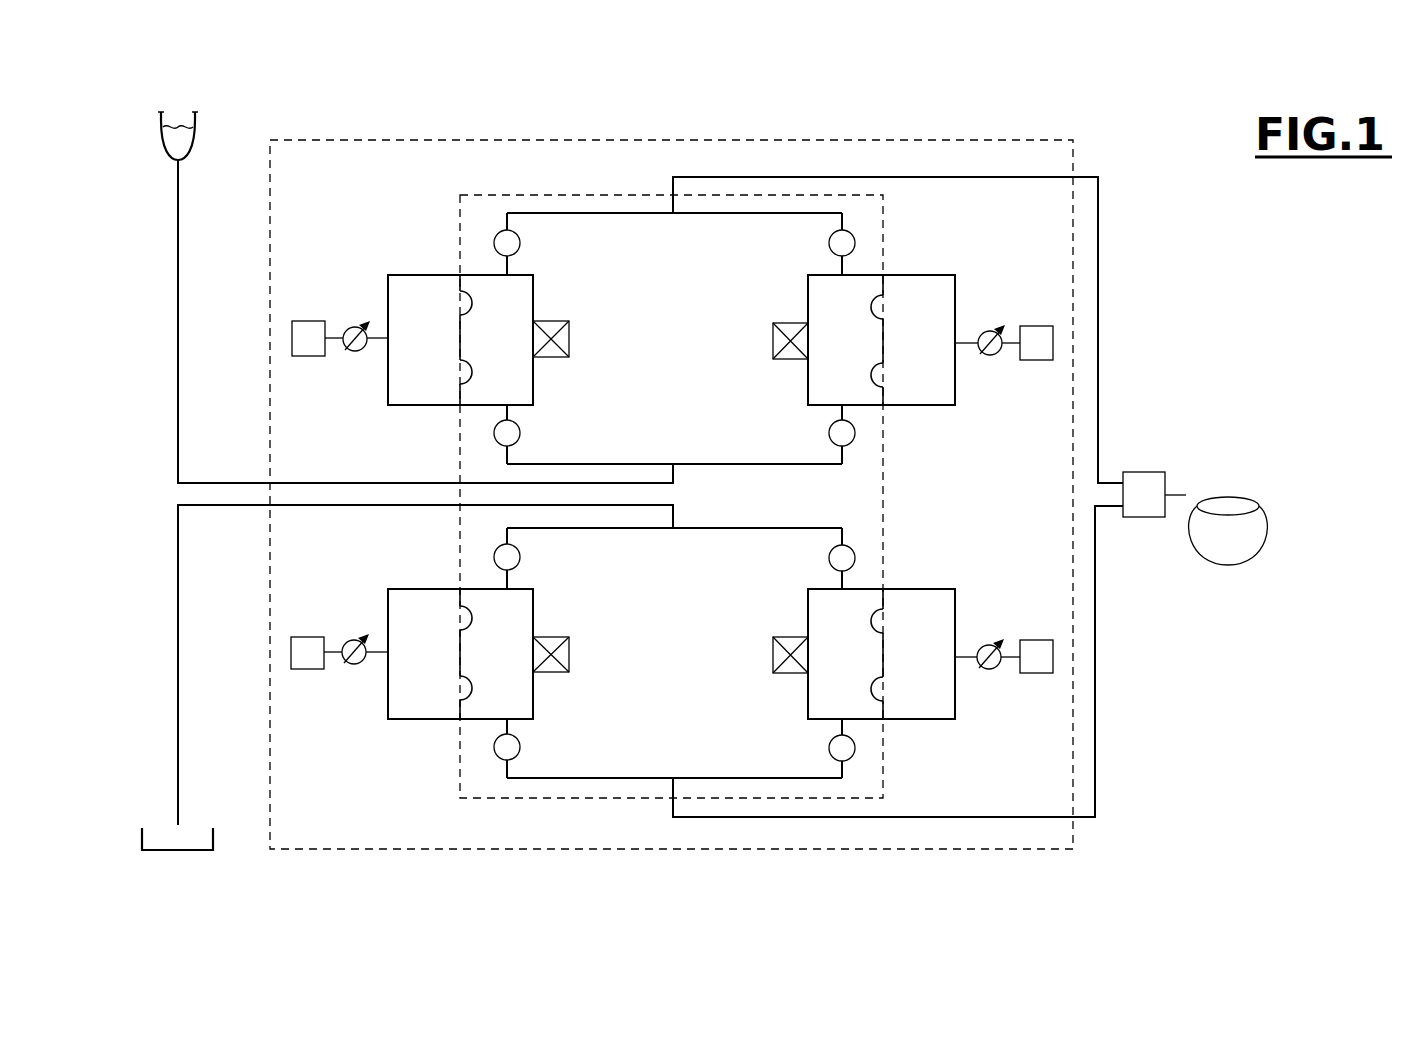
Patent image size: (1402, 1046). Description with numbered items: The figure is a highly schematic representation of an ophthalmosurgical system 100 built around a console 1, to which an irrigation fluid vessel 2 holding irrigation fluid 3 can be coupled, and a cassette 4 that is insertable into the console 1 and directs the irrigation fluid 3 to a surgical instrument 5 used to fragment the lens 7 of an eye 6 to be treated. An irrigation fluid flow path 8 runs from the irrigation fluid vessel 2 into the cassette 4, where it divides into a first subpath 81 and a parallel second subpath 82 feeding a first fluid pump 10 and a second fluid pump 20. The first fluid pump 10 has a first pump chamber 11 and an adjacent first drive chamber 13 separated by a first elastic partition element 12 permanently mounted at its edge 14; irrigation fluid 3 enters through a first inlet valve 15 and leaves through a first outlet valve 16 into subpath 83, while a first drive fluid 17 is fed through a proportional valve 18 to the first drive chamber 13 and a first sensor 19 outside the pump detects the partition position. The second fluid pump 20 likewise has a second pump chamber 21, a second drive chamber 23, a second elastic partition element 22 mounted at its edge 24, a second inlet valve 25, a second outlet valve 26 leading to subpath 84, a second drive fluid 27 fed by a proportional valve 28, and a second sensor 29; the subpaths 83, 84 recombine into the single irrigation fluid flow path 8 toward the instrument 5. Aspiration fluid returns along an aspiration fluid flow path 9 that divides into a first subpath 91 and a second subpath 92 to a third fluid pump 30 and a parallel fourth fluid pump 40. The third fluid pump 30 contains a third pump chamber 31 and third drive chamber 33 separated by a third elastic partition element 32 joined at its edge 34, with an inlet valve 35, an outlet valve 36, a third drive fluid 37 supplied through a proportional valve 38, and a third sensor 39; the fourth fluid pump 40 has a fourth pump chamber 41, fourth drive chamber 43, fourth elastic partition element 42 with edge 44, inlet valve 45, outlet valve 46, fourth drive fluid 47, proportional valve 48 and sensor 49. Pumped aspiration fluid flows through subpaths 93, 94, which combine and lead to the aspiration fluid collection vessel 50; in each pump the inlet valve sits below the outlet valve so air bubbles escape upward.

The console 1 is at (1001, 140).
The irrigation fluid vessel 2 is at (200, 122).
The irrigation fluid 3 is at (176, 128).
The cassette 4 is at (487, 195).
The surgical instrument 5 is at (1146, 472).
The eye 6 is at (1244, 566).
The lens 7 is at (1228, 500).
The irrigation fluid flow path 8 is at (180, 389).
The aspiration fluid flow path 9 is at (180, 611).
The first fluid pump 10 is at (455, 342).
The first pump chamber 11 is at (488, 322).
The first elastic partition element 12 is at (466, 346).
The first drive chamber 13 is at (413, 322).
The edge 14 is at (460, 286).
The first inlet valve 15 is at (521, 433).
The first outlet valve 16 is at (521, 245).
The first drive fluid 17 is at (304, 322).
The proportional valve 18 is at (349, 326).
The first sensor 19 is at (570, 342).
The second fluid pump 20 is at (886, 340).
The second pump chamber 21 is at (828, 327).
The second elastic partition element 22 is at (879, 358).
The second drive chamber 23 is at (904, 327).
The edge 24 is at (884, 290).
The second inlet valve 25 is at (829, 433).
The second outlet valve 26 is at (829, 243).
The second drive fluid 27 is at (1036, 326).
The proportional valve 28 is at (987, 330).
The second sensor 29 is at (772, 342).
The third fluid pump 30 is at (459, 660).
The third pump chamber 31 is at (487, 639).
The third elastic partition element 32 is at (466, 663).
The third drive chamber 33 is at (414, 639).
The edge 34 is at (460, 599).
The inlet valve 35 is at (521, 748).
The outlet valve 36 is at (521, 559).
The third drive fluid 37 is at (303, 638).
The proportional valve 38 is at (351, 640).
The third sensor 39 is at (570, 652).
The fourth fluid pump 40 is at (878, 657).
The fourth pump chamber 41 is at (826, 642).
The fourth elastic partition element 42 is at (879, 676).
The fourth drive chamber 43 is at (905, 642).
The edge 44 is at (884, 604).
The inlet valve 45 is at (829, 748).
The outlet valve 46 is at (829, 558).
The fourth drive fluid 47 is at (1036, 640).
The proportional valve 48 is at (988, 644).
The sensor 49 is at (772, 656).
The aspiration fluid collection vessel 50 is at (213, 838).
The first subpath 81 is at (632, 463).
The second subpath 82 is at (714, 463).
The subpath 83 is at (626, 215).
The subpath 84 is at (706, 215).
The first subpath 91 is at (640, 777).
The second subpath 92 is at (714, 777).
The subpath 93 is at (624, 530).
The subpath 94 is at (716, 530).
The ophthalmosurgical system 100 is at (1165, 192).